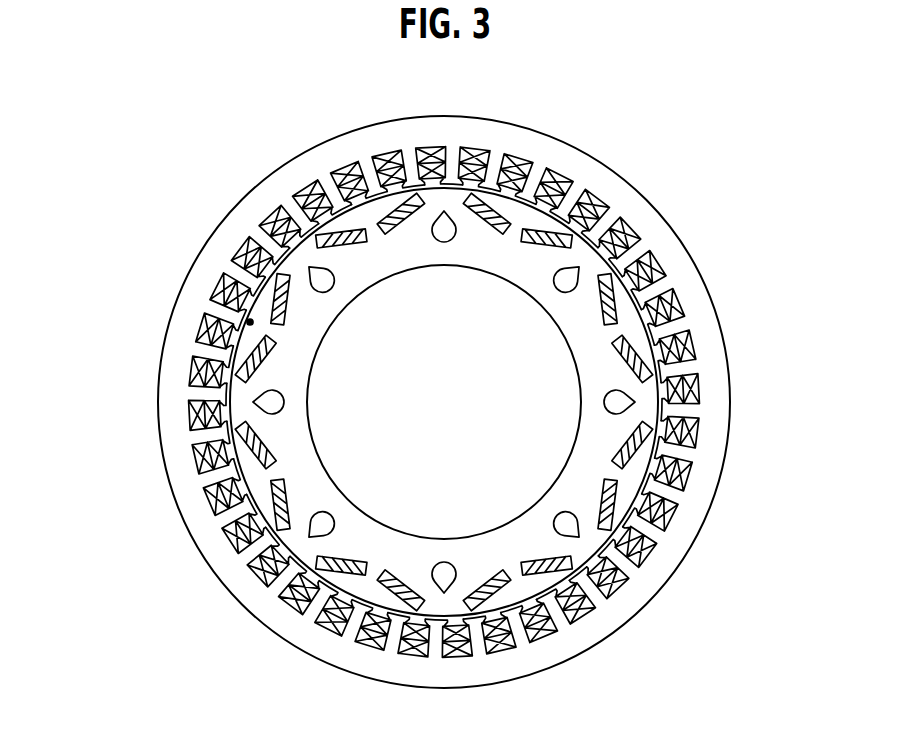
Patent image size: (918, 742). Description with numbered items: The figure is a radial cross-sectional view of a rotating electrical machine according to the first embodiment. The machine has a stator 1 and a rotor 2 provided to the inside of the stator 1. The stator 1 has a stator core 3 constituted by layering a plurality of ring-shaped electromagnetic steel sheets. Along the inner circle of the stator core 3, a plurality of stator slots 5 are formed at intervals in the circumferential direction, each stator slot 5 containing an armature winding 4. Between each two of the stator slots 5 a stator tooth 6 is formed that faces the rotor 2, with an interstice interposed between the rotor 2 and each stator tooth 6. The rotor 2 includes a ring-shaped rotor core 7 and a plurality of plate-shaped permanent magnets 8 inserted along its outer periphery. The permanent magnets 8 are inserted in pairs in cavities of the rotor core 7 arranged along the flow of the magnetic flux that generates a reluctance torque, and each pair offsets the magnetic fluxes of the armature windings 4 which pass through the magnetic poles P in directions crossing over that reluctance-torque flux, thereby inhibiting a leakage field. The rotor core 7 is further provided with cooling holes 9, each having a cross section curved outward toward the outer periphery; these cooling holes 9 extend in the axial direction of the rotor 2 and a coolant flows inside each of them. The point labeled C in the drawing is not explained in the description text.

The stator 1 is at (209, 217).
The rotor 2 is at (324, 364).
The stator core 3 is at (260, 190).
The armature winding 4 is at (563, 182).
The stator slot 5 is at (520, 165).
The stator tooth 6 is at (373, 188).
The rotor core 7 is at (412, 257).
The permanent magnet 8 is at (280, 506).
The cooling hole 9 is at (445, 568).
The center point C is at (248, 322).
The magnetic pole P is at (227, 413).